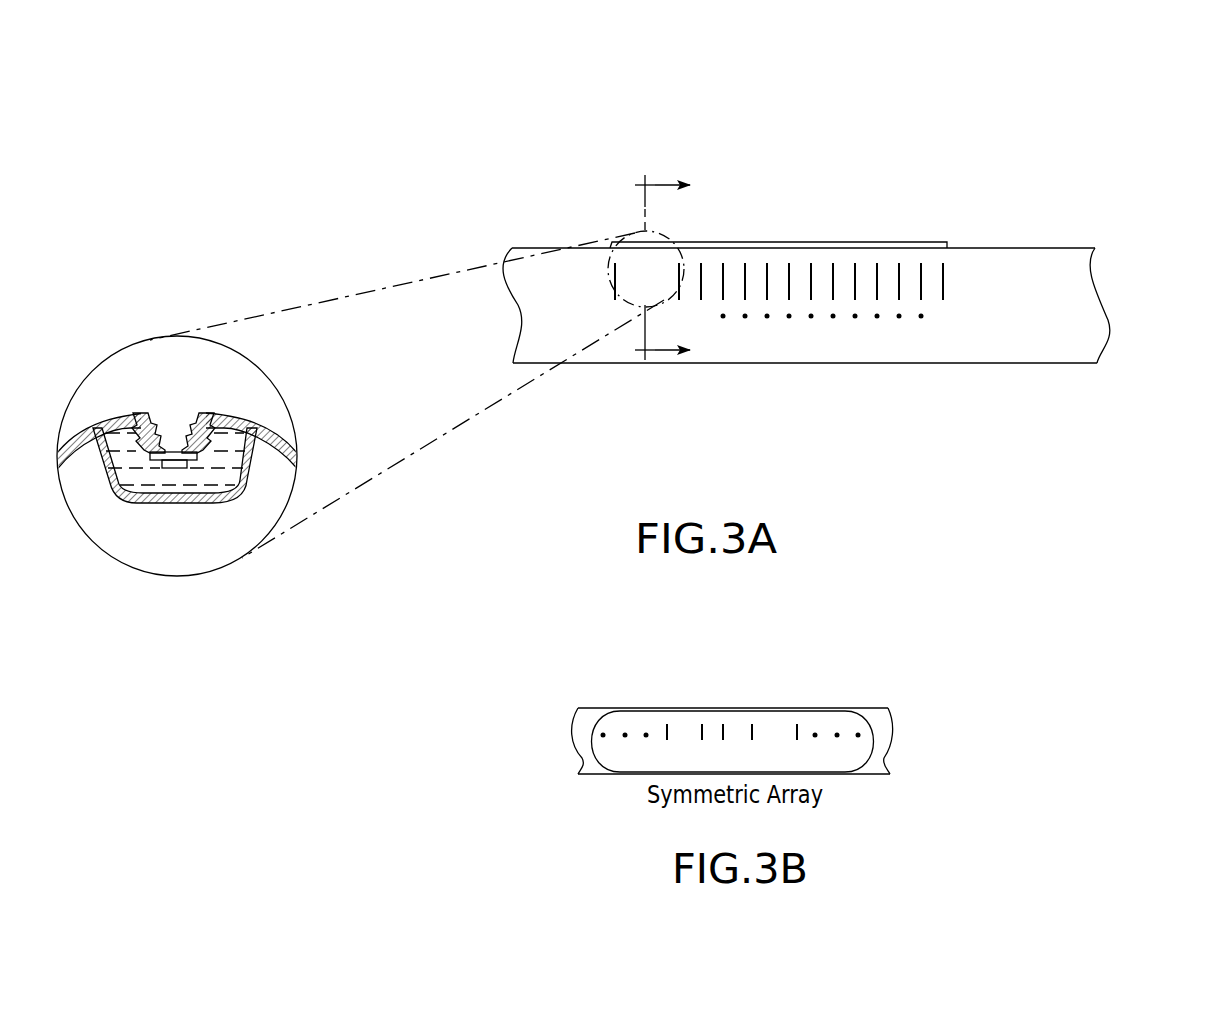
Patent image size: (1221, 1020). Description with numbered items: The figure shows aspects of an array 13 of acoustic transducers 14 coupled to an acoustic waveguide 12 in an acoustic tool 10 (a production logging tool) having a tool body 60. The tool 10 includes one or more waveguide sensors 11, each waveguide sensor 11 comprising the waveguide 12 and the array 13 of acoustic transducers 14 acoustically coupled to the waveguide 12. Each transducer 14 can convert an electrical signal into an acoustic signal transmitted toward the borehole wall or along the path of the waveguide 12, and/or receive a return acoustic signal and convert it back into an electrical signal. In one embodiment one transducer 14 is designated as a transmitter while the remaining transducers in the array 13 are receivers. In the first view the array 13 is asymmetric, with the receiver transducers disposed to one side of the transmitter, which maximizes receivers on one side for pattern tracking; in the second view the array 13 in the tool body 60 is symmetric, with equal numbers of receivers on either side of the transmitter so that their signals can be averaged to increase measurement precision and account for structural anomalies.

In FIG. 3A, the acoustic tool 10 is at (533, 248).
In FIG. 3A, the waveguide sensor 11 is at (160, 418).
In FIG. 3B, the waveguide sensor 11 is at (638, 680).
In FIG. 3A, the waveguide 12 is at (943, 238).
In FIG. 3A, the array 13 is at (557, 305).
In FIG. 3A, the acoustic transducers 14 is at (767, 303).
In FIG. 3B, the acoustic transducers 14 is at (652, 727).
In FIG. 3A, the tool body 60 is at (1040, 363).
In FIG. 3B, the tool body 60 is at (872, 660).